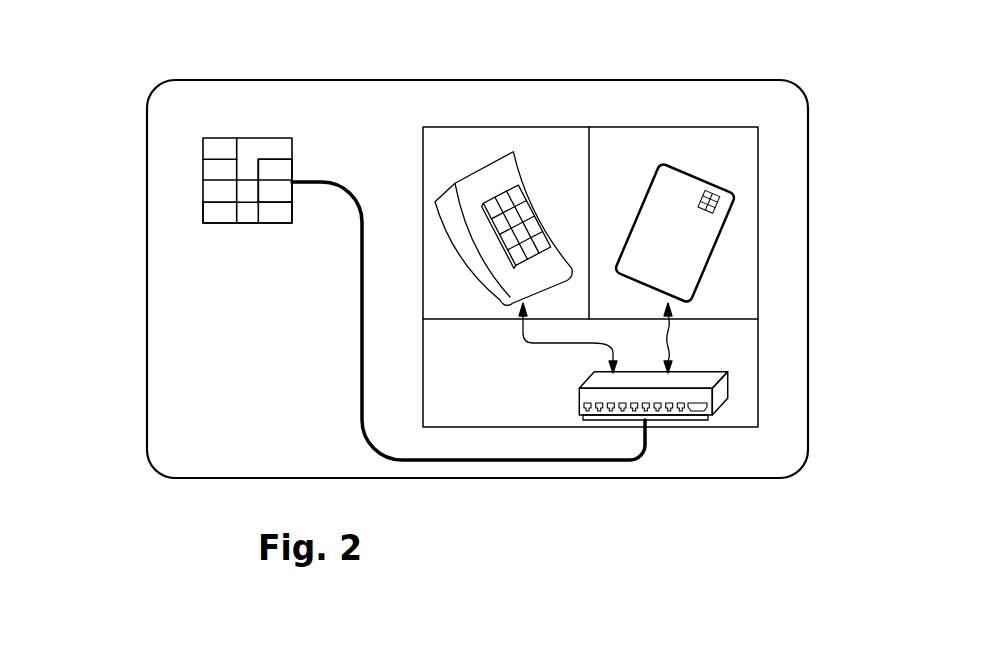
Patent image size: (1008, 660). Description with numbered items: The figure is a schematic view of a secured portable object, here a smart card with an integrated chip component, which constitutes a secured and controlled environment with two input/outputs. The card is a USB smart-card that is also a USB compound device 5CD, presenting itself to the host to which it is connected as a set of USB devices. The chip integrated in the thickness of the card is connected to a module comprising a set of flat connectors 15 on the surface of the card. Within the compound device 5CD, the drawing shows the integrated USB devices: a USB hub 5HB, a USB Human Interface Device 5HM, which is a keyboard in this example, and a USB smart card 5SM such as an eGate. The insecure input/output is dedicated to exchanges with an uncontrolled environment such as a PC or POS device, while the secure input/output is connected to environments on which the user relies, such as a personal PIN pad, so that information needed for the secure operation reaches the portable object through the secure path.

The flat connectors 15 is at (224, 128).
The USB compound device 5CD is at (162, 142).
The USB Human Interface Device 5HM is at (555, 157).
The USB smart card 5SM is at (708, 155).
The USB hub 5HB is at (522, 392).